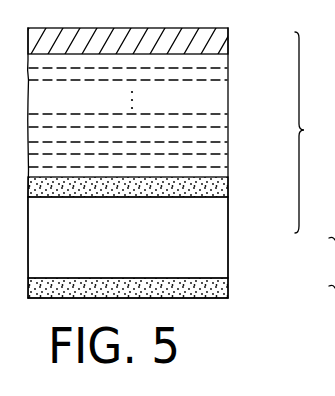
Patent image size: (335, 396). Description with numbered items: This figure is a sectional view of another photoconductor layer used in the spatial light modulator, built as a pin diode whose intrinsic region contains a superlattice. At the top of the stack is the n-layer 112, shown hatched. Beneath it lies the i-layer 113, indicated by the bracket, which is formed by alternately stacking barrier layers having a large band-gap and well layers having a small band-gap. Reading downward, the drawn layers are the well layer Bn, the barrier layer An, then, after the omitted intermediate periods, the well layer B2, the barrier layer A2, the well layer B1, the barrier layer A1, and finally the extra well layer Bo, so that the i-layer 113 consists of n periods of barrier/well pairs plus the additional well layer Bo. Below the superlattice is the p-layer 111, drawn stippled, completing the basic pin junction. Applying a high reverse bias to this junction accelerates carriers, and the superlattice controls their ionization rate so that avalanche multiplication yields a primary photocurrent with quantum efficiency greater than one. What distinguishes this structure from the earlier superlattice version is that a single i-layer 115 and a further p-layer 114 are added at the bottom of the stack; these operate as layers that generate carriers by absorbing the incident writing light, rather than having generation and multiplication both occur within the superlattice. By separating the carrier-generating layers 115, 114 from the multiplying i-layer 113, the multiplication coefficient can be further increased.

The n-layer 112 is at (222, 42).
The i-layer 113 is at (314, 132).
The well layer Bn is at (225, 62).
The barrier layer An is at (226, 75).
The well layer B2 is at (228, 126).
The barrier layer A2 is at (228, 133).
The well layer B1 is at (228, 147).
The barrier layer A1 is at (228, 162).
The well layer Bo is at (228, 175).
The p-layer 111 is at (228, 192).
The single i-layer 115 is at (222, 258).
The p-layer 114 is at (225, 287).